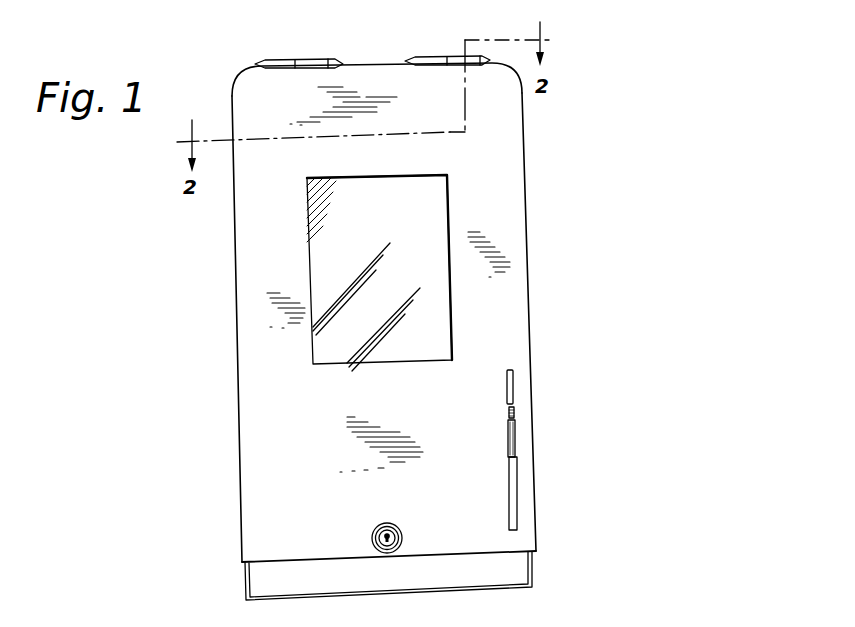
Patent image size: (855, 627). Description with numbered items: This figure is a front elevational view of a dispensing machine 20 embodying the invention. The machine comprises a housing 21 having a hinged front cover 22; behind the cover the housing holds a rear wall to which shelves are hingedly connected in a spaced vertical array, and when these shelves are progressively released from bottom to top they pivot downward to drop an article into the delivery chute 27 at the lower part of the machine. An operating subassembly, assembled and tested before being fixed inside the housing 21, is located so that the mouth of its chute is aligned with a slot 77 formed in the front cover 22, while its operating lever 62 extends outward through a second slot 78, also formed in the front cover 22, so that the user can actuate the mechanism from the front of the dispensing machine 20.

The dispensing machine 20 is at (228, 347).
The housing 21 is at (528, 241).
The hinged front cover 22 is at (498, 198).
The delivery chute 27 is at (513, 570).
The operating lever 62 is at (514, 415).
The slot 77 is at (513, 383).
The slot 78 is at (517, 480).